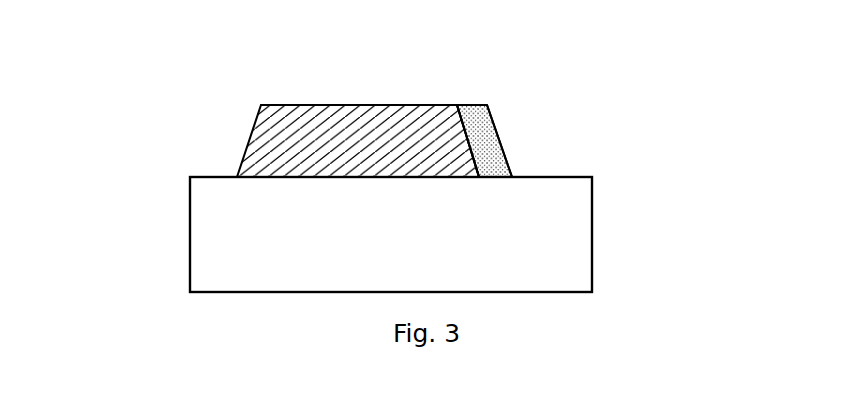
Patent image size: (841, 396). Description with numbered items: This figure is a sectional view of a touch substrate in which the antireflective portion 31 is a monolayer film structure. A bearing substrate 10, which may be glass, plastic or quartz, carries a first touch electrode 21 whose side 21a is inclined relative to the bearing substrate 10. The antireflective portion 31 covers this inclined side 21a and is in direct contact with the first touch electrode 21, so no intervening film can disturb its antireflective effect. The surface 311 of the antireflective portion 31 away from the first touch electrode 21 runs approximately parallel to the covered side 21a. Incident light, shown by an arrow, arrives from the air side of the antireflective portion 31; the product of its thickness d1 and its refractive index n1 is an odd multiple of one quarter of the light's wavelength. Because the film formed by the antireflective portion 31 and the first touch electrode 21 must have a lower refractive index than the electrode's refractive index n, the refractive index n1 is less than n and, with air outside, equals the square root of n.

The bearing substrate 10 is at (533, 267).
The first touch electrode 21 is at (288, 150).
The side of the first touch electrode 21a is at (467, 138).
The antireflective portion 31 is at (595, 167).
The surface of the antireflective portion 311 is at (465, 163).
The refractive index of the first touch electrode n is at (375, 92).
The refractive index of the first layer n1 is at (472, 90).
The thickness of the first layer d1 is at (507, 147).